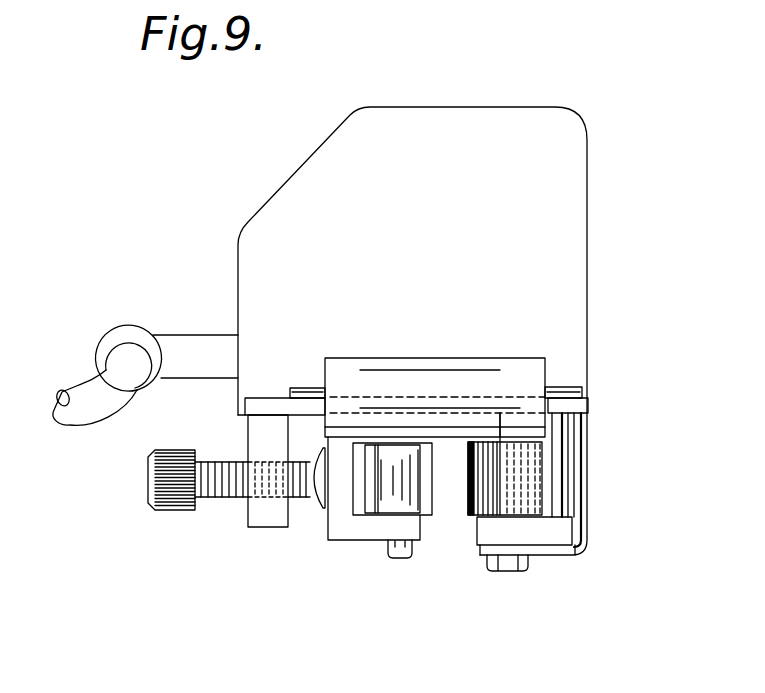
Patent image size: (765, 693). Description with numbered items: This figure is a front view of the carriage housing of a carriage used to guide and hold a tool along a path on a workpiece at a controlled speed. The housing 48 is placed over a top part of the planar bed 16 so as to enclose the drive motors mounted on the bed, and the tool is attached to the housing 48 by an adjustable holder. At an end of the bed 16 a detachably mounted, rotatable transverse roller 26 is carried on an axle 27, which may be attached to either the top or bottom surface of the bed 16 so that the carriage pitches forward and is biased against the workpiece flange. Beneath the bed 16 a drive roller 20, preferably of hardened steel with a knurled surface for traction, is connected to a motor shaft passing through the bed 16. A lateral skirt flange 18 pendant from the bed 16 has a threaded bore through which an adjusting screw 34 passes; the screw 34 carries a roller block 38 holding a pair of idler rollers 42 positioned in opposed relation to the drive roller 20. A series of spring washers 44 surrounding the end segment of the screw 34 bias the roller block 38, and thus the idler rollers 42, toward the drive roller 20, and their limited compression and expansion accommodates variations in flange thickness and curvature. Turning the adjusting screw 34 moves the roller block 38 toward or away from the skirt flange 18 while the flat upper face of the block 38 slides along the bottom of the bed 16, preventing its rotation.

The housing 48 is at (290, 175).
The planar bed 16 is at (268, 398).
The axle 27 is at (302, 388).
The transverse roller 26 is at (413, 368).
The drive roller 20 is at (492, 466).
The adjusting screw 34 is at (222, 480).
The lateral skirt flange 18 is at (262, 517).
The spring washers 44 is at (310, 510).
The roller block 38 is at (355, 535).
The idler roller 42 is at (420, 485).